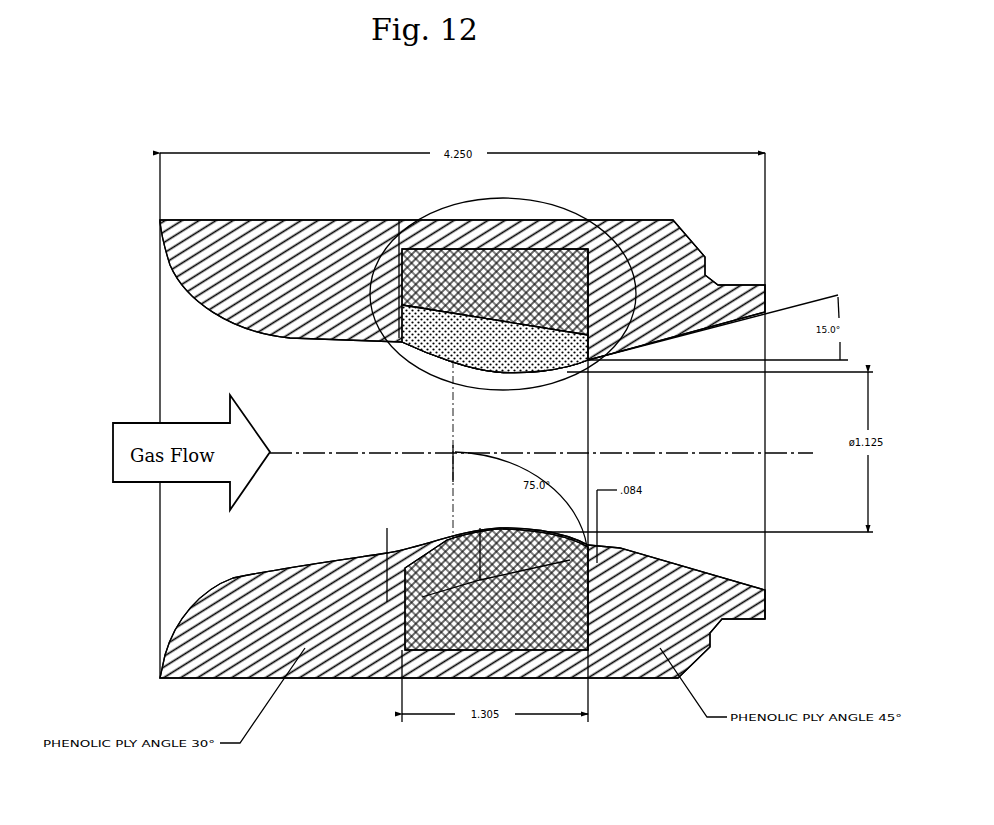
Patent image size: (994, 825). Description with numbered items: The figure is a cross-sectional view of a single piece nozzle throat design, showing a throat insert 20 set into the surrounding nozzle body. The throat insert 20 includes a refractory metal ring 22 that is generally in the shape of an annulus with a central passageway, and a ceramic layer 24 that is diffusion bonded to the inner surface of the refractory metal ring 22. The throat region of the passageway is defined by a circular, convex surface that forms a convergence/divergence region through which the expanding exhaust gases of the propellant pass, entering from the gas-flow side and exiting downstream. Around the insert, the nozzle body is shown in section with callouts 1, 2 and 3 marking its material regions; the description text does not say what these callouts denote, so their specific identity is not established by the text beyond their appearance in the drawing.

The throat insert 20 is at (586, 374).
The refractory metal ring 22 is at (525, 272).
The ceramic layer 24 is at (455, 352).
The phenolic ply angle 45 degree region 1 is at (462, 474).
The phenolic ply angle 30 degree region 2 is at (462, 508).
The insert layer 3 is at (401, 697).